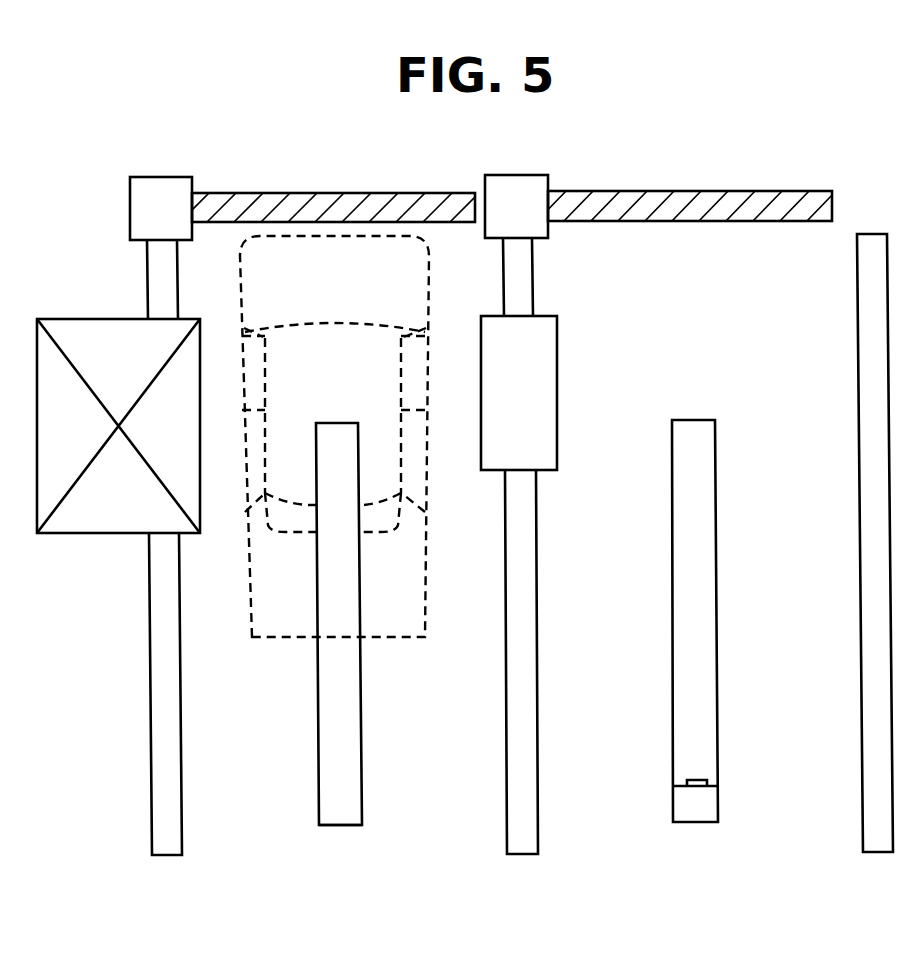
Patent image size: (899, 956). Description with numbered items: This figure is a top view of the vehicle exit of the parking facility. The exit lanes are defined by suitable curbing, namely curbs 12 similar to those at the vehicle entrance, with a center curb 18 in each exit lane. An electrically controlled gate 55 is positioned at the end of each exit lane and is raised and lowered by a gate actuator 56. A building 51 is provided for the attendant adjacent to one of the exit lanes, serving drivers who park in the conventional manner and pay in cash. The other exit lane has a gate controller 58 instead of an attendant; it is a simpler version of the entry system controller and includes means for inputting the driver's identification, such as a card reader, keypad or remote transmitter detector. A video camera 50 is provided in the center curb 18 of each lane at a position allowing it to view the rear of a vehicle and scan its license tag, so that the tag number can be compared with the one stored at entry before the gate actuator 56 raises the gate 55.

The curb 12 is at (172, 692).
The center curb 18 is at (360, 700).
The video camera 50 is at (362, 795).
The building 51 is at (80, 535).
The gate 55 is at (340, 193).
The gate actuator 56 is at (155, 198).
The gate controller 58 is at (533, 414).